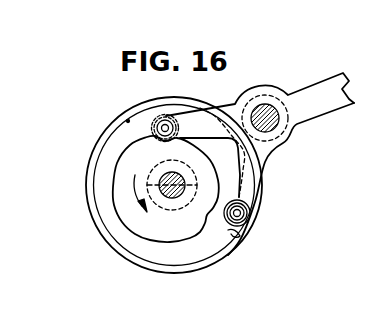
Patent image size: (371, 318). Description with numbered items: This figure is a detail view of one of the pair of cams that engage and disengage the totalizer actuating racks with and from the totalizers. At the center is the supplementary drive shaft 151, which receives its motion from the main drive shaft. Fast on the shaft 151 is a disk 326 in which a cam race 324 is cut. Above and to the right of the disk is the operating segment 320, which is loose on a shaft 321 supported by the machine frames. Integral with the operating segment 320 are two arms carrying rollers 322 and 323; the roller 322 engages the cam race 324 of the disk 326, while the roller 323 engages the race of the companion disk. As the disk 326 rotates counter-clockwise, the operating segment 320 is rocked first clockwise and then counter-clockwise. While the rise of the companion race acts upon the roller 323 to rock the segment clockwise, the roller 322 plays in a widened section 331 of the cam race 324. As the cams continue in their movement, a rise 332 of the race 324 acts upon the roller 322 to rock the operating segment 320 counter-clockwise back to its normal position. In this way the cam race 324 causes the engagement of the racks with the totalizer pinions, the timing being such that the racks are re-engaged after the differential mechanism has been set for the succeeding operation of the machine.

The supplementary drive shaft 151 is at (183, 197).
The operating segment 320 is at (313, 117).
The shaft 321 is at (271, 113).
The roller 322 is at (178, 123).
The roller 323 is at (250, 213).
The cam race 324 is at (93, 198).
The disk 326 is at (107, 242).
The widened section 331 is at (241, 234).
The rise 332 is at (128, 121).